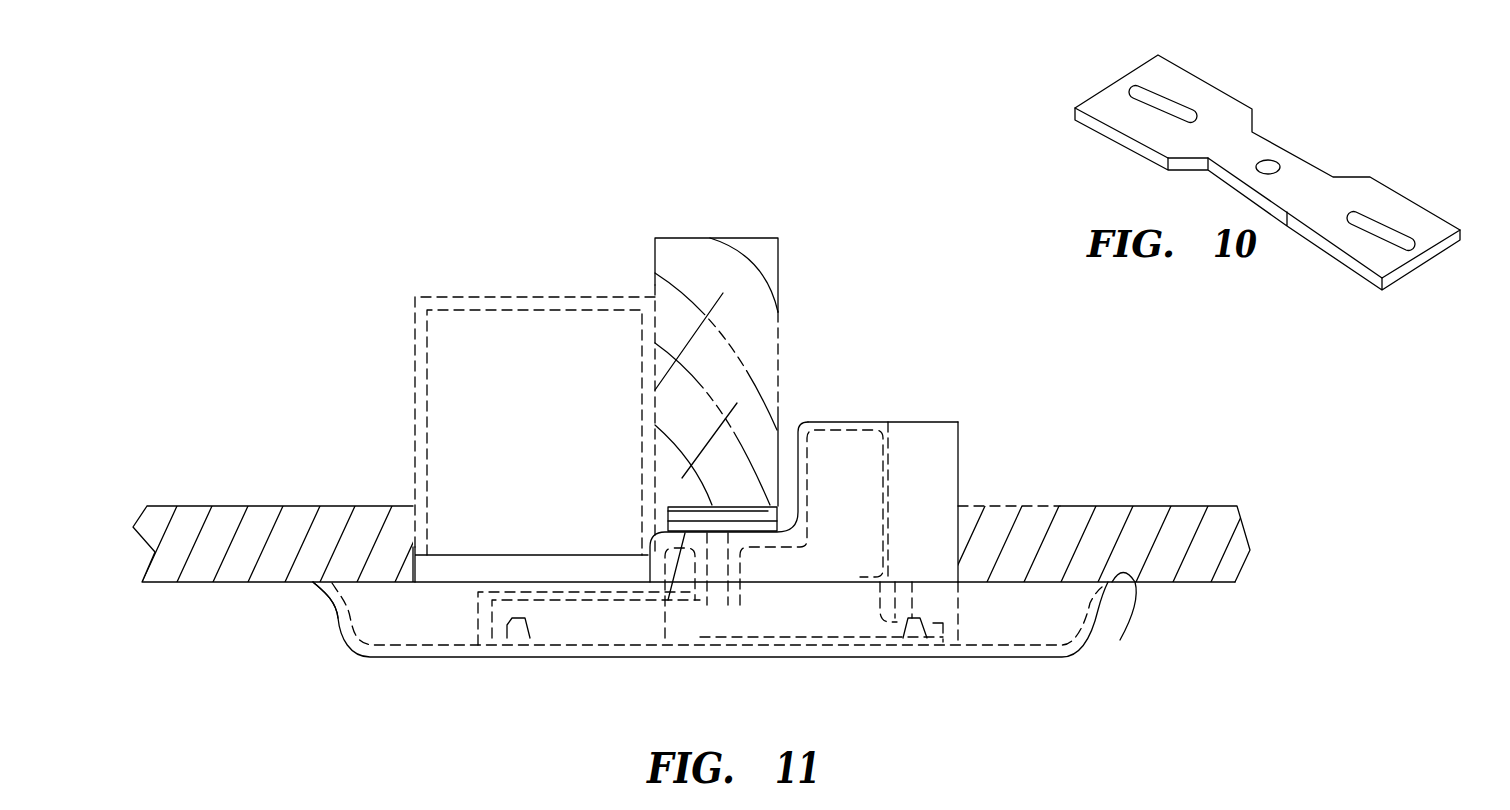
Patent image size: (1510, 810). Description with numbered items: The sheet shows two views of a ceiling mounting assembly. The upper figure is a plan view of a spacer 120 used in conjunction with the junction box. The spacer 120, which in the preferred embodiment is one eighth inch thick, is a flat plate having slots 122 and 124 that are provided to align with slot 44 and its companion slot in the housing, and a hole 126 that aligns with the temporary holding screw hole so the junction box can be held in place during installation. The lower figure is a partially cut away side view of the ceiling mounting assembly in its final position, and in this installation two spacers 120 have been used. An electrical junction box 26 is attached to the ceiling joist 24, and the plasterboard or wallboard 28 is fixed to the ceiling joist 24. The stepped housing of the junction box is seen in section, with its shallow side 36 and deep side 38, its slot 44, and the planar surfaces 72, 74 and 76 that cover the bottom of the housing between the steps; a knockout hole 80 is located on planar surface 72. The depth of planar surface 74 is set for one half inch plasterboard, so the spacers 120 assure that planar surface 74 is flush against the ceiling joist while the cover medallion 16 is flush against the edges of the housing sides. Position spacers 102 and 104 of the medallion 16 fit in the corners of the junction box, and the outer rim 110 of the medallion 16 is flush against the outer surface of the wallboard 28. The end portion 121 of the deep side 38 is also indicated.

In FIG. 11, the cover medallion 16 is at (1077, 653).
In FIG. 11, the ceiling joist 24 is at (778, 268).
In FIG. 11, the electrical junction box 26 is at (590, 297).
In FIG. 11, the plasterboard or wallboard 28 is at (1162, 587).
In FIG. 11, the shallow side 36 is at (478, 615).
In FIG. 11, the deep side 38 is at (890, 495).
In FIG. 11, the slot 44 is at (717, 627).
In FIG. 11, the planar surface 72 is at (615, 597).
In FIG. 11, the planar surface 74 is at (668, 600).
In FIG. 11, the planar surface 76 is at (920, 422).
In FIG. 11, the knockout hole 80 is at (575, 597).
In FIG. 11, the position spacer 102 is at (518, 625).
In FIG. 11, the position spacer 104 is at (913, 625).
In FIG. 11, the outer rim 110 is at (1120, 640).
In FIG. 10, the spacer 120 is at (1403, 190).
In FIG. 11, the spacer 120 is at (770, 511).
In FIG. 11, the end portion 121 is at (958, 455).
In FIG. 10, the slot 122 is at (1143, 87).
In FIG. 10, the slot 124 is at (1397, 230).
In FIG. 10, the hole 126 is at (1277, 163).